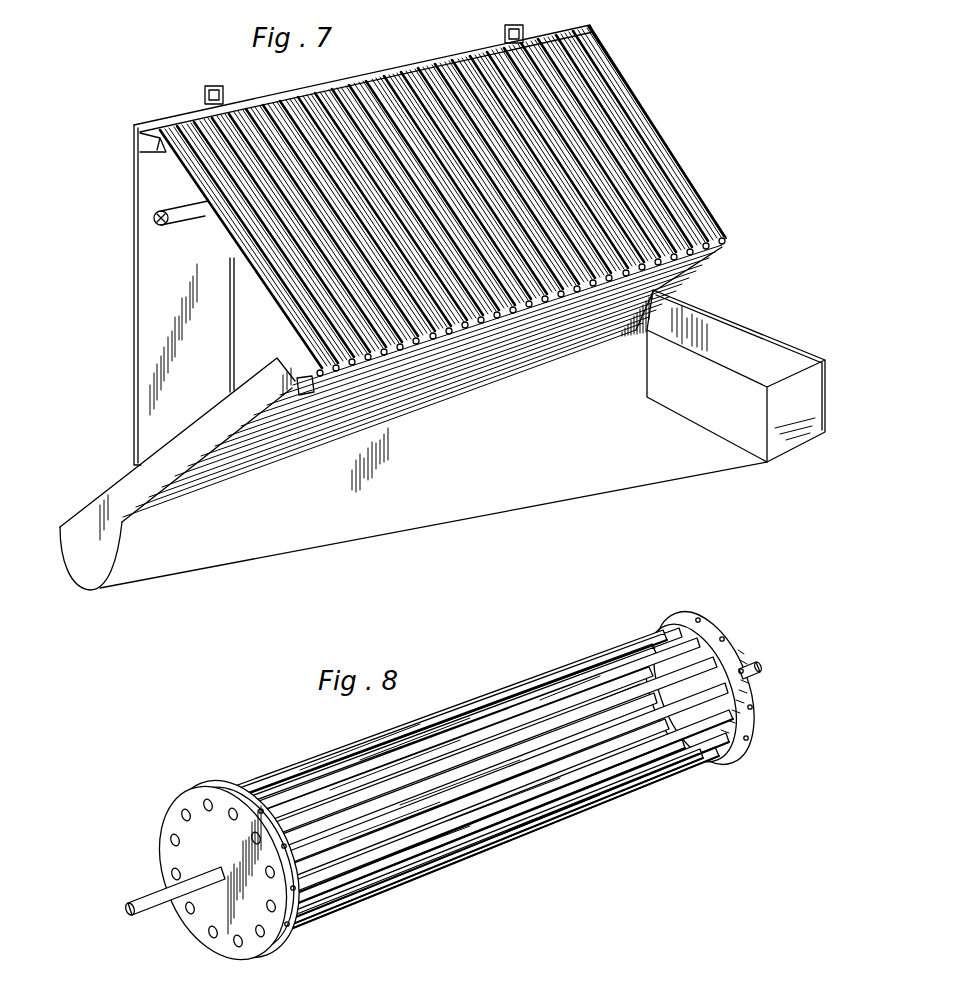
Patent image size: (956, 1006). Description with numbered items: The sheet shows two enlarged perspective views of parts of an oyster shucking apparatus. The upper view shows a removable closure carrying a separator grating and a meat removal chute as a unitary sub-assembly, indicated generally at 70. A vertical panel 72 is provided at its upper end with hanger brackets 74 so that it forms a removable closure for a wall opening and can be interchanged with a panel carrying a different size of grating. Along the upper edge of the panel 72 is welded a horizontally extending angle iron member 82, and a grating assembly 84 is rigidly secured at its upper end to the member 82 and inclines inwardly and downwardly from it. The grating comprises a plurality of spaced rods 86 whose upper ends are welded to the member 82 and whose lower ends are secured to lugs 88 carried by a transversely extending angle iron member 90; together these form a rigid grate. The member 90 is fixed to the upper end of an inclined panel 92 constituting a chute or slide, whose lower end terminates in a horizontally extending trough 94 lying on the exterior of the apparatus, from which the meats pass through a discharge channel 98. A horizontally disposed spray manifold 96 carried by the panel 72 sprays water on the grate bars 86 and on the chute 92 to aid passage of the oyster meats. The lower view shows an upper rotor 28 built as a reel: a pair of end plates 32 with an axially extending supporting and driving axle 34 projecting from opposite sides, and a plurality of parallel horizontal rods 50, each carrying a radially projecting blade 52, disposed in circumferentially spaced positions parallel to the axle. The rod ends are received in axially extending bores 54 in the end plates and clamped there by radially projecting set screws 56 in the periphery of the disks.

In FIG. 7, the grate assembly 70 is at (445, 50).
In FIG. 7, the vertical panel 72 is at (150, 295).
In FIG. 7, the hanger brackets 74 is at (213, 86).
In FIG. 7, the angle iron member 82 is at (158, 153).
In FIG. 7, the grating assembly 84 is at (673, 146).
In FIG. 7, the rods 86 is at (293, 273).
In FIG. 7, the lugs 88 is at (520, 318).
In FIG. 7, the transversely extending member 90 is at (297, 392).
In FIG. 7, the inclined panel 92 is at (440, 381).
In FIG. 7, the trough 94 is at (90, 573).
In FIG. 7, the spray manifold 96 is at (195, 221).
In FIG. 7, the discharge channel 98 is at (716, 413).
In FIG. 8, the upper rotor 28 is at (252, 772).
In FIG. 8, the end plates 32 is at (741, 657).
In FIG. 8, the axle 34 is at (150, 906).
In FIG. 8, the rods 50 is at (521, 690).
In FIG. 8, the blade 52 is at (466, 728).
In FIG. 8, the bores 54 is at (224, 813).
In FIG. 8, the set screws 56 is at (228, 788).